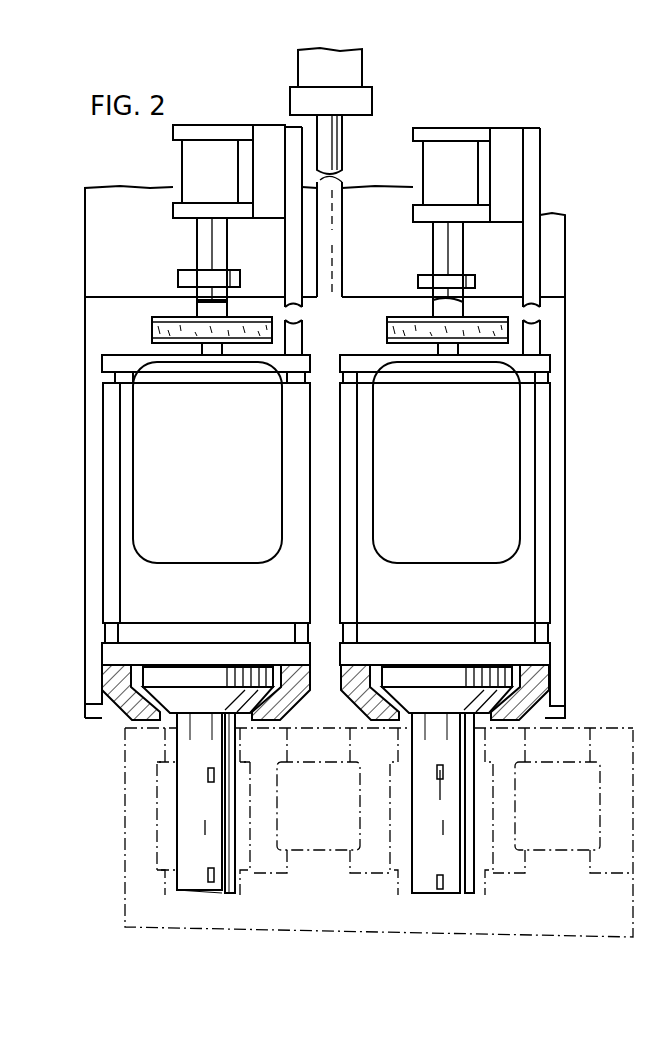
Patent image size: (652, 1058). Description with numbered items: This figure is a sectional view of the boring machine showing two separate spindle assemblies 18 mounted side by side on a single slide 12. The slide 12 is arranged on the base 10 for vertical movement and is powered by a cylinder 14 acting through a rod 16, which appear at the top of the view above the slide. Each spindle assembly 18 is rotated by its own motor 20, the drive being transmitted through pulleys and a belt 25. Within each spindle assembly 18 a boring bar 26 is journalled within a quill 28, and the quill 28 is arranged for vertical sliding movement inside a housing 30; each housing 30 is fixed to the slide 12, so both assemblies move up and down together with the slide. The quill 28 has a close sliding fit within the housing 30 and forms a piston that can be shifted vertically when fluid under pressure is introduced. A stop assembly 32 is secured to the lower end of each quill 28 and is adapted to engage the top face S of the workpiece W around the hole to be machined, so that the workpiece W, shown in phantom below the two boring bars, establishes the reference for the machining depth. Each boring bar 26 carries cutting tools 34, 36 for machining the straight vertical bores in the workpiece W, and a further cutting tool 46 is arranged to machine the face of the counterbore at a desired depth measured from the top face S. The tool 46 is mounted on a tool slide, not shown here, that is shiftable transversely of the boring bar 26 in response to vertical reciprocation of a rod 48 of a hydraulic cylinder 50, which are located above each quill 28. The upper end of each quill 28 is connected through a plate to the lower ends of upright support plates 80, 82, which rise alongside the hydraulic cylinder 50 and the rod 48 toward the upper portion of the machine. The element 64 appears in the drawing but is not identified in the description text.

The base 10 is at (92, 217).
The slide 12 is at (116, 302).
The cylinder 14 is at (363, 72).
The rod 16 is at (343, 143).
The spindle assembly 18 is at (323, 521).
The motor 20 is at (326, 462).
The belt 25 is at (152, 331).
The boring bar 26 is at (182, 832).
The quill 28 is at (115, 632).
The housing 30 is at (326, 499).
The stop assembly 32 is at (562, 684).
The cutting tool 34 is at (222, 882).
The cutting tool 36 is at (209, 782).
The fourth cutting tool 46 is at (212, 728).
The rod 48 is at (197, 248).
The hydraulic cylinder 50 is at (182, 163).
The collar 64 is at (178, 280).
The upright support plate 80 is at (541, 270).
The upright support plate 82 is at (285, 245).
The top face S is at (262, 730).
The workpiece W is at (125, 820).